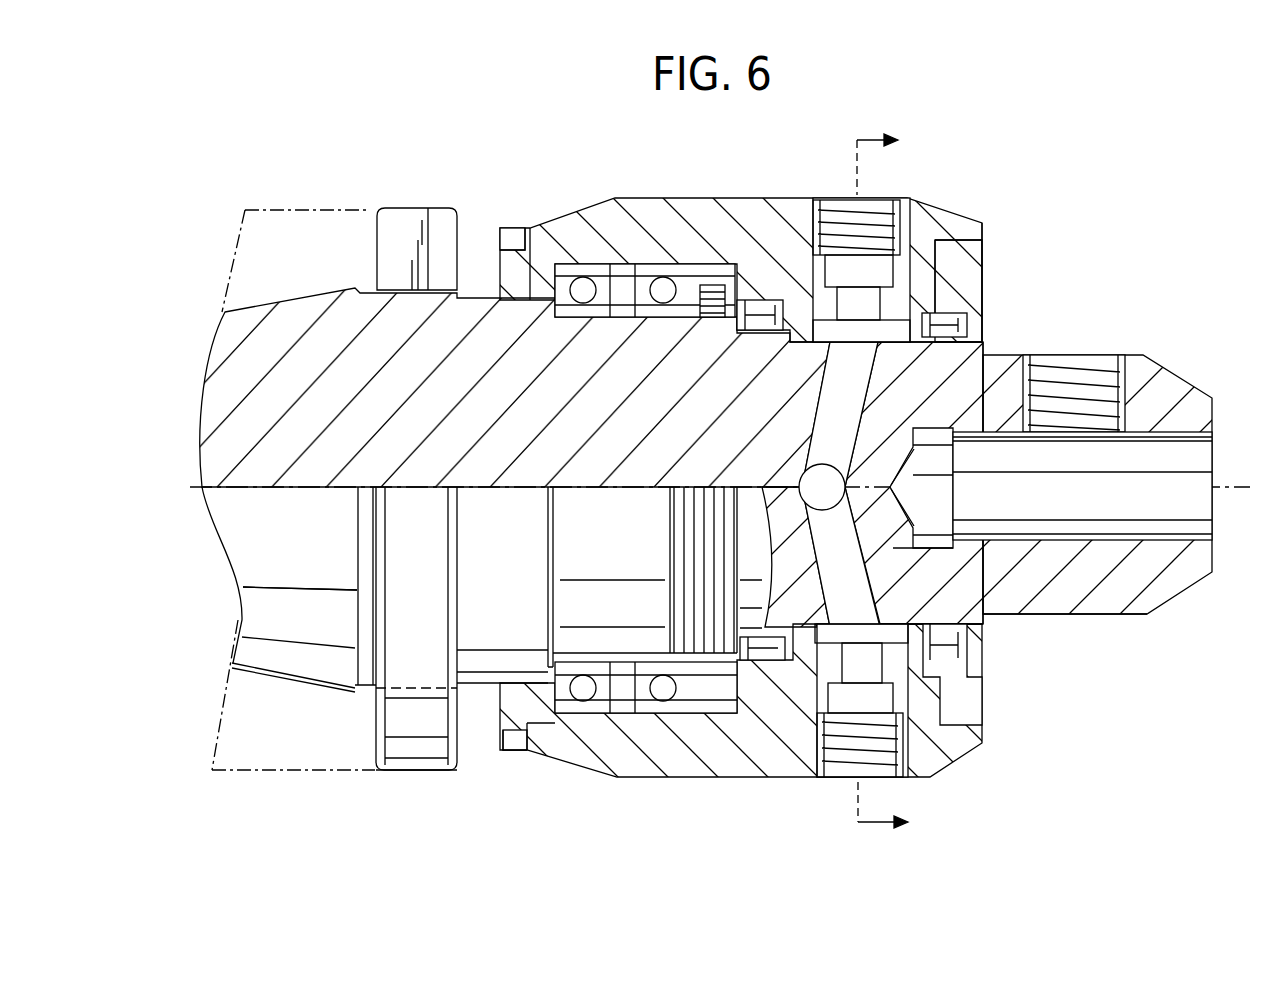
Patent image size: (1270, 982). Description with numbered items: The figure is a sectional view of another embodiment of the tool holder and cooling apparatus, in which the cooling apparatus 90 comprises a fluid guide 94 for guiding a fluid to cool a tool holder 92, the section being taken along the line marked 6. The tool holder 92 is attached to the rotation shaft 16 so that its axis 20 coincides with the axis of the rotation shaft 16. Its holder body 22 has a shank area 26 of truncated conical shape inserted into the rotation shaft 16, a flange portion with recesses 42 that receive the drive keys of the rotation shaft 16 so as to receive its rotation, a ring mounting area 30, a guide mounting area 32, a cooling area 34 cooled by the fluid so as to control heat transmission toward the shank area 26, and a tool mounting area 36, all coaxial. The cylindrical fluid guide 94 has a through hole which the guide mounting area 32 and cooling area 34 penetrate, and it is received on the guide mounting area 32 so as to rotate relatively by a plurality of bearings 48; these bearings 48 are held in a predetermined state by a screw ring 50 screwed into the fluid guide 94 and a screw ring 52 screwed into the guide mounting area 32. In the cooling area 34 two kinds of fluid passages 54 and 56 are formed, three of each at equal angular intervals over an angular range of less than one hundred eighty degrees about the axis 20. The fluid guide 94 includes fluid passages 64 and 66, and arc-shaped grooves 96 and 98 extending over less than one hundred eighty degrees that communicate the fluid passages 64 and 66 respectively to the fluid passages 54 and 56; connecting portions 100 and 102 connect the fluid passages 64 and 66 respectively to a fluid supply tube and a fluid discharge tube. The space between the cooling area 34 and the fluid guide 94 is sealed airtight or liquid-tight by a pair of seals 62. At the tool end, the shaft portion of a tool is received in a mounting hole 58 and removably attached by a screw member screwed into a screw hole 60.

The rotation shaft 16 is at (290, 232).
The axis 20 is at (312, 490).
The holder body 22 is at (392, 776).
The shank area 26 is at (305, 665).
The ring mounting area 30 is at (431, 752).
The guide mounting area 32 is at (597, 720).
The cooling area 34 is at (945, 575).
The tool mounting area 36 is at (1117, 587).
The recesses 42 is at (405, 225).
The bearings 48 is at (660, 706).
The screw ring 50 is at (513, 745).
The screw ring 52 is at (722, 660).
The fluid passages 54 is at (855, 400).
The fluid passages 56 is at (897, 548).
The mounting hole 58 is at (1183, 522).
The screw hole 60 is at (1097, 358).
The seals 62 is at (947, 330).
The fluid passage 64 is at (875, 310).
The fluid passage 66 is at (990, 715).
The cooling apparatus 90 is at (1020, 163).
The tool holder 92 is at (1190, 368).
The fluid guide 94 is at (987, 220).
The groove 96 is at (818, 330).
The groove 98 is at (823, 642).
The connecting portion 100 is at (842, 205).
The connecting portion 102 is at (852, 762).
The section line 6 is at (898, 483).